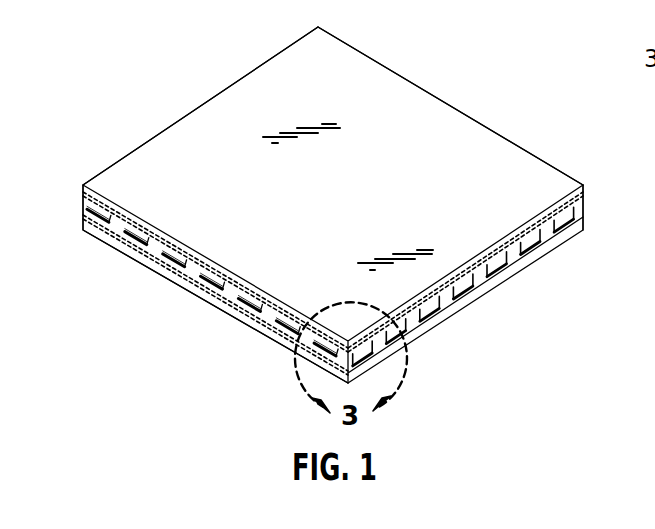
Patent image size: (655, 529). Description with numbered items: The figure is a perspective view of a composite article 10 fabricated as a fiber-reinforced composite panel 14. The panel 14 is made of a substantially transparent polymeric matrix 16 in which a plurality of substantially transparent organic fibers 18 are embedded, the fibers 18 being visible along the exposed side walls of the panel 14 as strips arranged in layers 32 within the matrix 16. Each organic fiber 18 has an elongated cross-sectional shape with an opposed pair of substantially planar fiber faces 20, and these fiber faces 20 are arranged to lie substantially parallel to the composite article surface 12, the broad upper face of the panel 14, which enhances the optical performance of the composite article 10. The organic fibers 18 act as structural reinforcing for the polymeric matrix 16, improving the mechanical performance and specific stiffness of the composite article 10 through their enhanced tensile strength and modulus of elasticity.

The composite article 10 is at (192, 111).
The composite article surface 12 is at (393, 92).
The fiber-reinforced composite panel 14 is at (465, 113).
The polymeric matrix 16 is at (85, 202).
The organic fibers 18 is at (209, 287).
The fiber faces 20 is at (549, 231).
The layers 32 is at (578, 217).